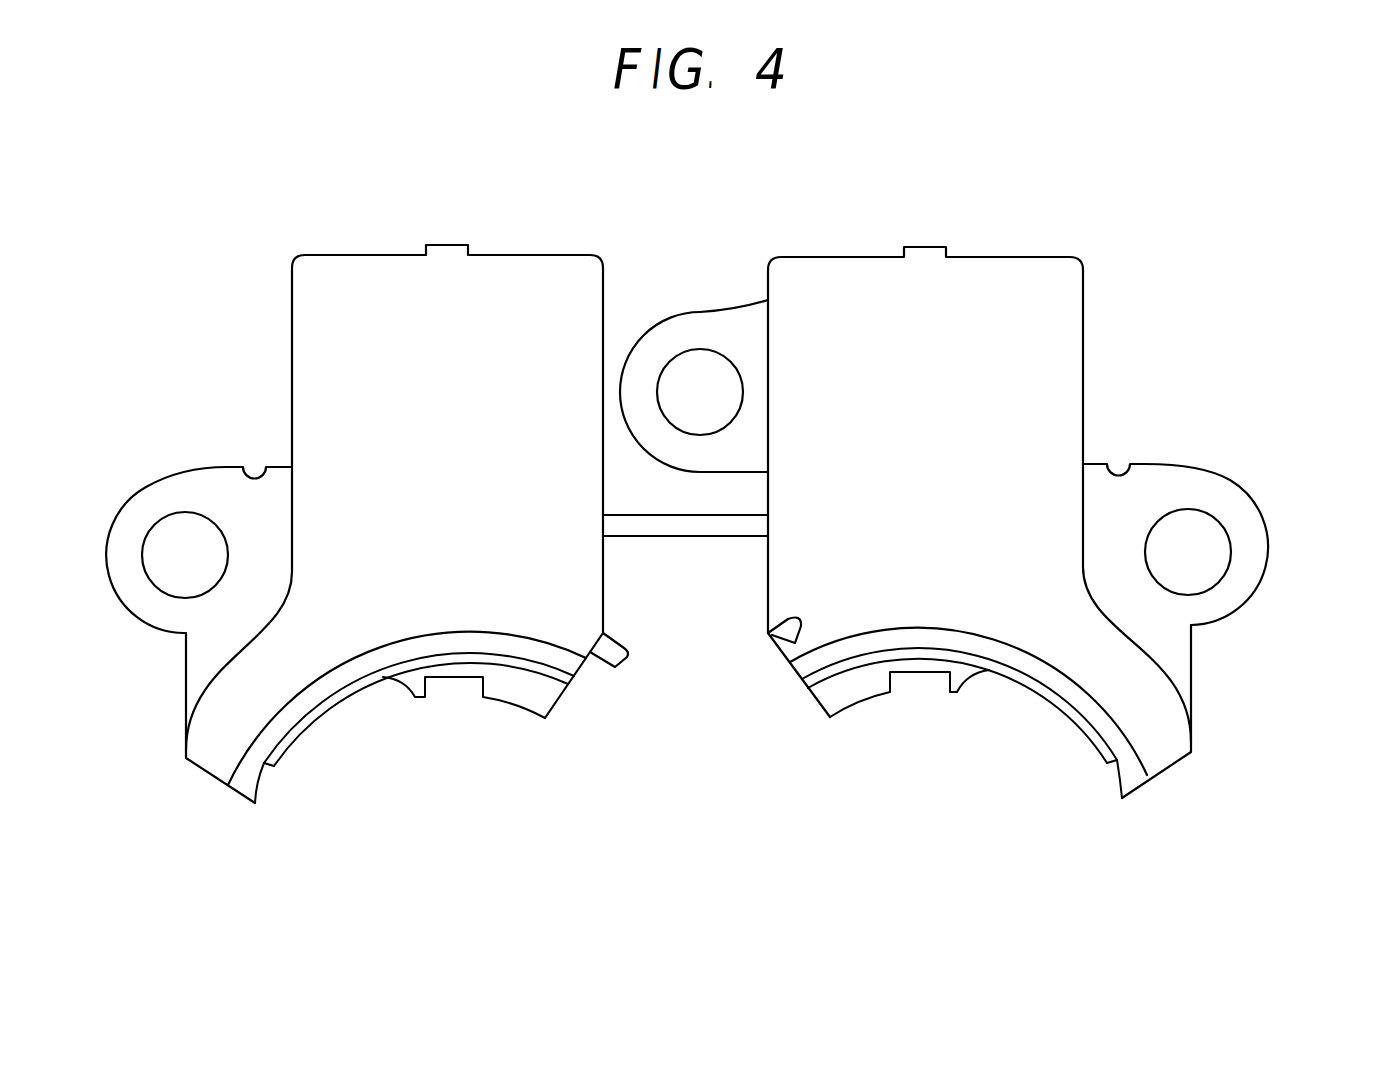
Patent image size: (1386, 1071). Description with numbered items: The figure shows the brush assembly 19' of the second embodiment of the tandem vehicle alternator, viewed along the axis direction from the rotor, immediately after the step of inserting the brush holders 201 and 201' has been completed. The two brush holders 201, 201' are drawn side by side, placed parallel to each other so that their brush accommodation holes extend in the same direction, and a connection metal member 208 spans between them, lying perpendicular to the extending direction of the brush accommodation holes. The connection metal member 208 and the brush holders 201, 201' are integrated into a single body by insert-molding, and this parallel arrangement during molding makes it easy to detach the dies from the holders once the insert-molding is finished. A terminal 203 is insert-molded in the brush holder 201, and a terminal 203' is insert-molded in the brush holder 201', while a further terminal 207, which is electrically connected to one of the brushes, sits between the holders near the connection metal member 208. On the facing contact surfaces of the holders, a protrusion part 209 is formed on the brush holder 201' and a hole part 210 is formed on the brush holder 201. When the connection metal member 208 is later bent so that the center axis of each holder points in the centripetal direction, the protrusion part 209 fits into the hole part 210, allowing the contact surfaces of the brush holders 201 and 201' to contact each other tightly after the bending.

The brush assembly 19' is at (671, 461).
The brush holder 201' is at (394, 478).
The brush holder 201 is at (979, 487).
The terminal 203' is at (172, 513).
The terminal 203 is at (1233, 528).
The terminal 207 is at (690, 338).
The connection metal member 208 is at (682, 524).
The protrusion part 209 is at (614, 667).
The hole part 210 is at (772, 637).